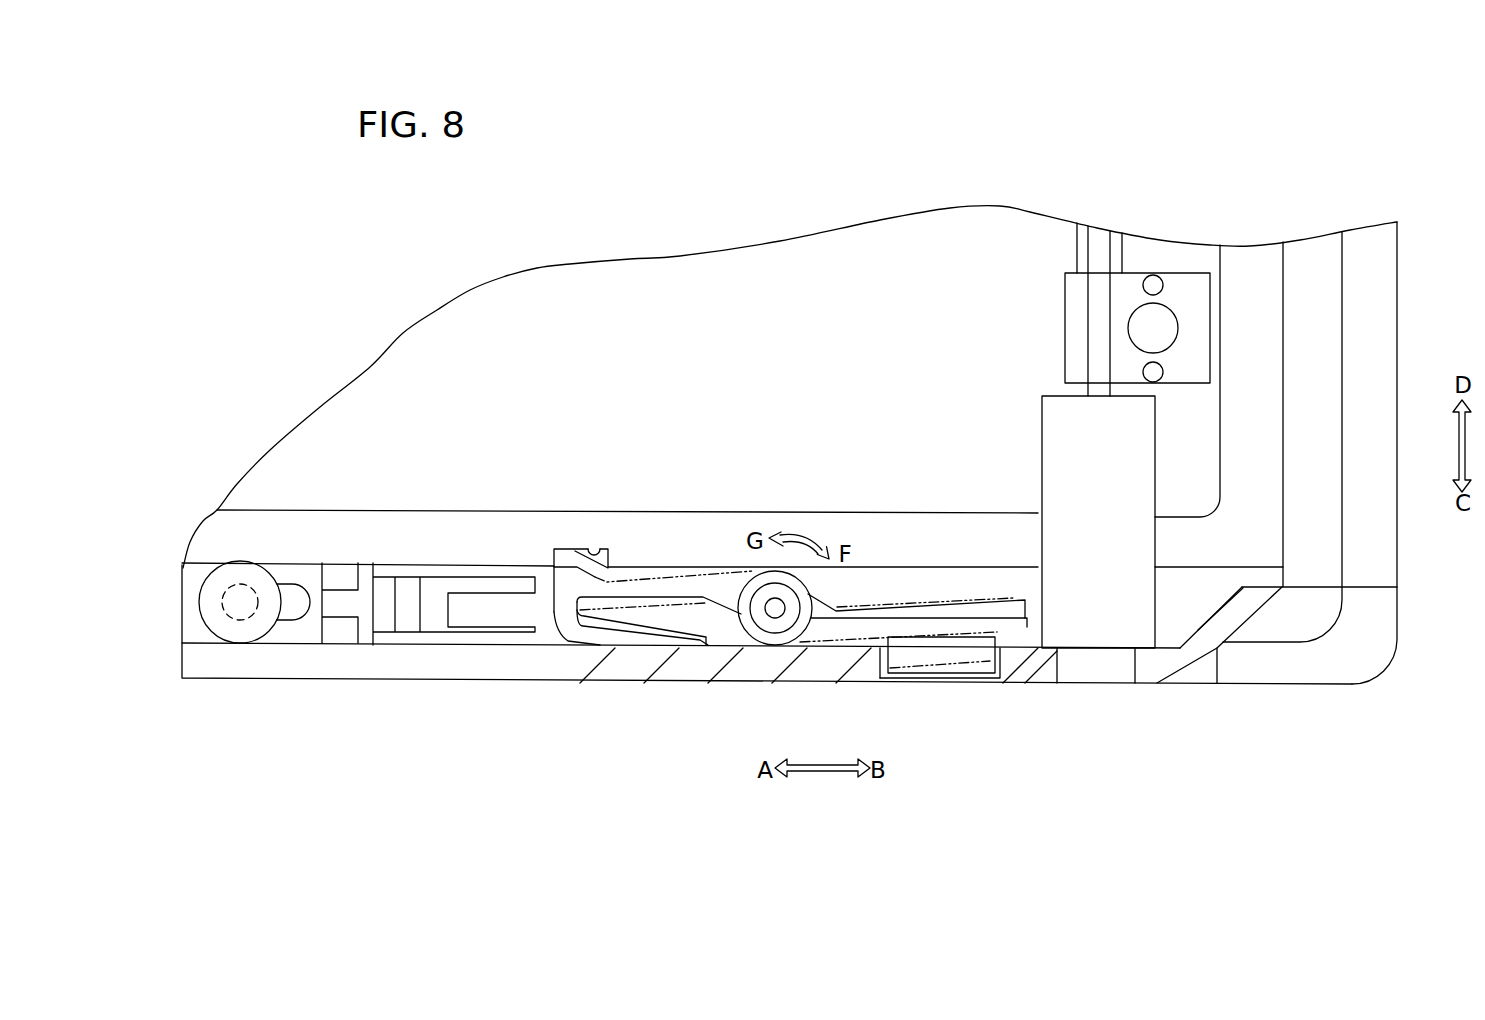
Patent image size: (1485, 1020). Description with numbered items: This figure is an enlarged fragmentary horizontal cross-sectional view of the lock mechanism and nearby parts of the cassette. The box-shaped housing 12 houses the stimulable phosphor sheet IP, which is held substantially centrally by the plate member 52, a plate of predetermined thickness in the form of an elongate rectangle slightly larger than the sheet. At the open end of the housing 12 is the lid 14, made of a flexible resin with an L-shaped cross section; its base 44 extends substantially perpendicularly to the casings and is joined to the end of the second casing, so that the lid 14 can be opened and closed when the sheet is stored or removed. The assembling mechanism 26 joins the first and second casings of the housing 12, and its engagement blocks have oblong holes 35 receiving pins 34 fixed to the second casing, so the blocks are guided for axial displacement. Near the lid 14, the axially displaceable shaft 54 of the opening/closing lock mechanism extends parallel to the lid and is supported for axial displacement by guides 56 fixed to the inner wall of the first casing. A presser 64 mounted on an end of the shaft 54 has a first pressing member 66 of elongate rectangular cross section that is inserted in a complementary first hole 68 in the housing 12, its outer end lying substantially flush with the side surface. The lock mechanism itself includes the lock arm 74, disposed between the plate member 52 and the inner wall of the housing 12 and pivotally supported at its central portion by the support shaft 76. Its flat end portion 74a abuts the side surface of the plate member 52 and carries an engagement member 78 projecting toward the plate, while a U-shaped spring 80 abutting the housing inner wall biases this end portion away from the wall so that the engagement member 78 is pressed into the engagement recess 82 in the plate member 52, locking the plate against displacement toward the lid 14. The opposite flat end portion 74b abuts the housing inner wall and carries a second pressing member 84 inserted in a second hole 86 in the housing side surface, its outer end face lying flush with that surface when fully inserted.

The housing 12 is at (473, 687).
The lid 14 is at (1413, 287).
The assembling mechanism 26 is at (187, 619).
The pin 34 is at (243, 598).
The oblong hole 35 is at (292, 622).
The base 44 is at (1385, 331).
The plate member 52 is at (713, 274).
The shaft 54 is at (1097, 245).
The guide 56 is at (1190, 290).
The presser 64 is at (1068, 465).
The first pressing member 66 is at (1081, 661).
The first hole 68 is at (1125, 661).
The lock arm 74 is at (771, 639).
The flat end portion 74a is at (562, 602).
The opposite flat end portion 74b is at (1013, 627).
The support shaft 76 is at (773, 610).
The engagement member 78 is at (565, 557).
The spring 80 is at (598, 626).
The engagement recess 82 is at (603, 550).
The second pressing member 84 is at (961, 670).
The second hole 86 is at (878, 661).
The stimulable phosphor sheet IP is at (379, 391).